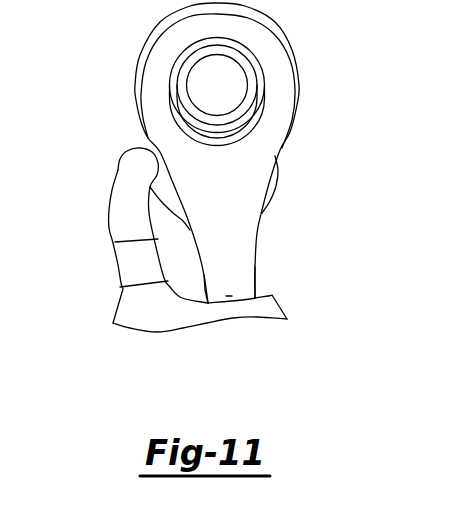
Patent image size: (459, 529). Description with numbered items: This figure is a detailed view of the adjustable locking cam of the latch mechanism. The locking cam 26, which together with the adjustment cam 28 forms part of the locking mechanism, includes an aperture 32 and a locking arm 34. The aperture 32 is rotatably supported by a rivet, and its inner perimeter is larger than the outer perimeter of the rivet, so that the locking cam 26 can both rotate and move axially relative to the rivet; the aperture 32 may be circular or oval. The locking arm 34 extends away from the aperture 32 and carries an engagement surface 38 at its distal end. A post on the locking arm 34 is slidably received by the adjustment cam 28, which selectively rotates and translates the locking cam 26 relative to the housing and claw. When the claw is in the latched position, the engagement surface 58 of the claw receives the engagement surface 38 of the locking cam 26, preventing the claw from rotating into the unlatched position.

The adjustment cam 28 is at (136, 136).
The aperture 32 is at (223, 139).
The locking cam 26 is at (190, 262).
The locking arm 34 is at (245, 282).
The engagement surface 38 is at (243, 302).
The engagement surface 58 is at (228, 302).